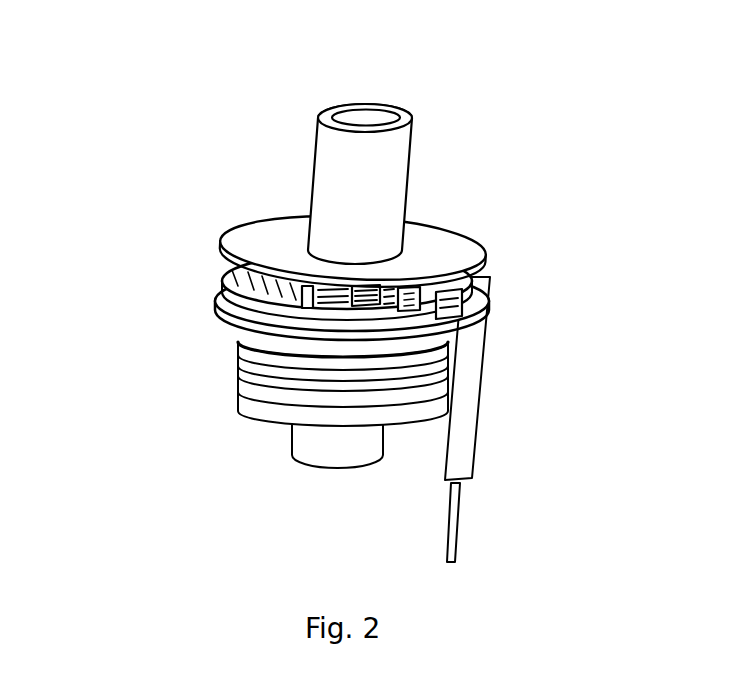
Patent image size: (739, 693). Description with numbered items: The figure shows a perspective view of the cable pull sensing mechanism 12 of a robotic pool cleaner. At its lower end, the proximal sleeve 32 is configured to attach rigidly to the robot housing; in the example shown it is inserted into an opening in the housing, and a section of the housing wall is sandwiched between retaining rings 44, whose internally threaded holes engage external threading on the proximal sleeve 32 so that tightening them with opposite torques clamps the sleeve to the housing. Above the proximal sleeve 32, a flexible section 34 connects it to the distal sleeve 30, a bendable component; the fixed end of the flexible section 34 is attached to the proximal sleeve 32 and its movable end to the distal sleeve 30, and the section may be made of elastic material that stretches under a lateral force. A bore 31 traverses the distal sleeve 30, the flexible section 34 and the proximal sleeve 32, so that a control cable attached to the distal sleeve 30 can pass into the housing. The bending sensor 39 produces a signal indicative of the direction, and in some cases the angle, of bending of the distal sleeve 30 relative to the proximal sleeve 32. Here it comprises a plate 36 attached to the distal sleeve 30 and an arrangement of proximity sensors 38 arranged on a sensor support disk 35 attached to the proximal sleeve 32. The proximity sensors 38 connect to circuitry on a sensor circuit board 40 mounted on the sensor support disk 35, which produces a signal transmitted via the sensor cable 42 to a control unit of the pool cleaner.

The cable pull sensing mechanism 12 is at (241, 105).
The distal sleeve 30 is at (398, 172).
The bore 31 is at (370, 118).
The proximal sleeve 32 is at (295, 447).
The flexible section 34 is at (303, 306).
The sensor support disk 35 is at (472, 343).
The plate 36 is at (277, 228).
The proximity sensors 38 is at (428, 325).
The bending sensor 39 is at (178, 254).
The sensor circuit board 40 is at (282, 323).
The sensor cable 42 is at (450, 512).
The retaining rings 44 is at (237, 388).